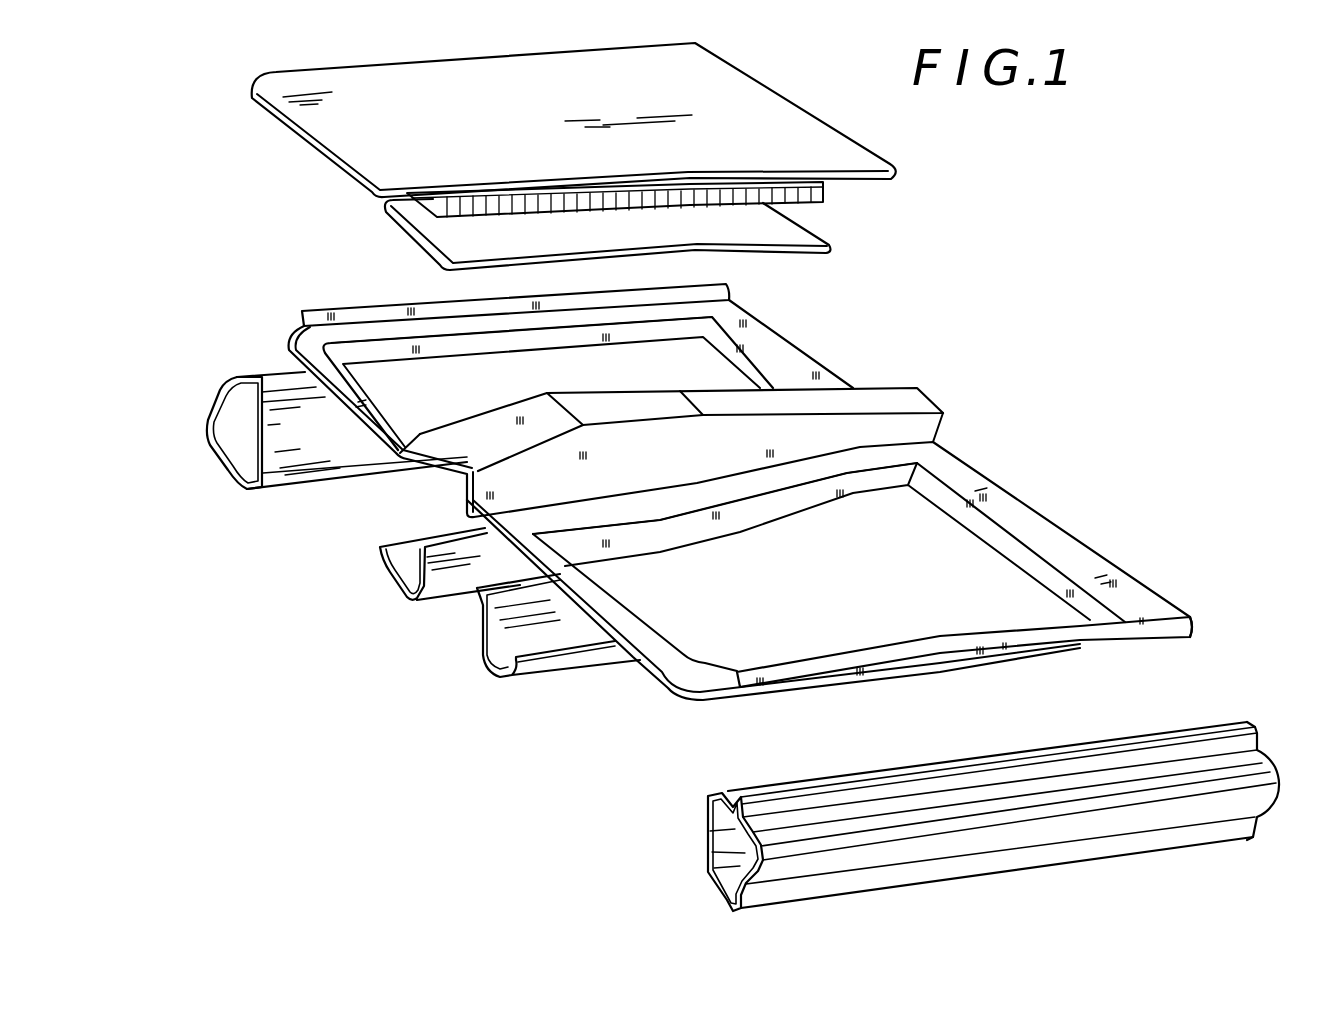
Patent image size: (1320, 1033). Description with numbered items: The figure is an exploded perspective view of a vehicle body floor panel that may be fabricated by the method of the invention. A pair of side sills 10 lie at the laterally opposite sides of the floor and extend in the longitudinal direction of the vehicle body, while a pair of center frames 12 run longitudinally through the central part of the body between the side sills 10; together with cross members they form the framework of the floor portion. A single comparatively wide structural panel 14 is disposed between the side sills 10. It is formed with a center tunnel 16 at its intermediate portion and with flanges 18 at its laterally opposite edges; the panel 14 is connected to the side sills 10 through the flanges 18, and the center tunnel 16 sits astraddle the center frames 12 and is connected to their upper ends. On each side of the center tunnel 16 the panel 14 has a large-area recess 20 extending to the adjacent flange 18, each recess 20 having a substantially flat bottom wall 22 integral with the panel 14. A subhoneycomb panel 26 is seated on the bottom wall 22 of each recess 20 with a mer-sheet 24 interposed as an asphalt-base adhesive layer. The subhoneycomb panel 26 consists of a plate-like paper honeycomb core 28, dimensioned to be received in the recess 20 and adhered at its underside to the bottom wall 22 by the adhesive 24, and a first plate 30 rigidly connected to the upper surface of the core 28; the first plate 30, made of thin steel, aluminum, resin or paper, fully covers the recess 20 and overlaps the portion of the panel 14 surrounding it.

The side sill 10 is at (227, 372).
The center frame 12 is at (417, 605).
The structural panel 14 is at (980, 466).
The center tunnel 16 is at (645, 400).
The flange 18 is at (365, 318).
The recess 20 is at (760, 362).
The flat bottom wall 22 is at (496, 360).
The mer-sheet 24 is at (833, 249).
The subhoneycomb panel 26 is at (790, 130).
The honeycomb core 28 is at (825, 195).
The first plate 30 is at (843, 149).